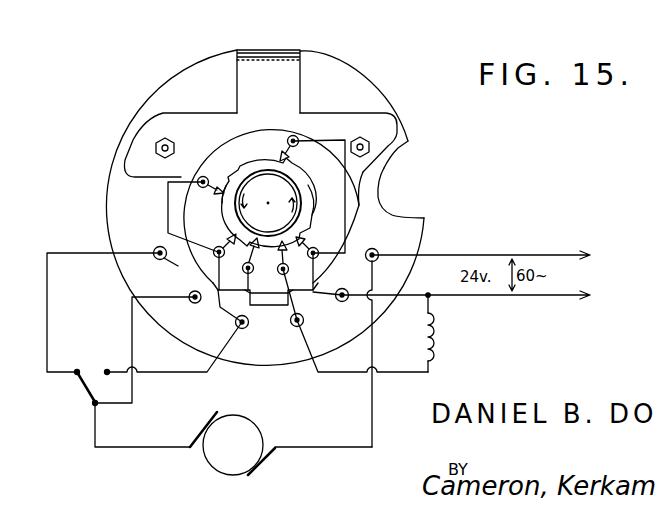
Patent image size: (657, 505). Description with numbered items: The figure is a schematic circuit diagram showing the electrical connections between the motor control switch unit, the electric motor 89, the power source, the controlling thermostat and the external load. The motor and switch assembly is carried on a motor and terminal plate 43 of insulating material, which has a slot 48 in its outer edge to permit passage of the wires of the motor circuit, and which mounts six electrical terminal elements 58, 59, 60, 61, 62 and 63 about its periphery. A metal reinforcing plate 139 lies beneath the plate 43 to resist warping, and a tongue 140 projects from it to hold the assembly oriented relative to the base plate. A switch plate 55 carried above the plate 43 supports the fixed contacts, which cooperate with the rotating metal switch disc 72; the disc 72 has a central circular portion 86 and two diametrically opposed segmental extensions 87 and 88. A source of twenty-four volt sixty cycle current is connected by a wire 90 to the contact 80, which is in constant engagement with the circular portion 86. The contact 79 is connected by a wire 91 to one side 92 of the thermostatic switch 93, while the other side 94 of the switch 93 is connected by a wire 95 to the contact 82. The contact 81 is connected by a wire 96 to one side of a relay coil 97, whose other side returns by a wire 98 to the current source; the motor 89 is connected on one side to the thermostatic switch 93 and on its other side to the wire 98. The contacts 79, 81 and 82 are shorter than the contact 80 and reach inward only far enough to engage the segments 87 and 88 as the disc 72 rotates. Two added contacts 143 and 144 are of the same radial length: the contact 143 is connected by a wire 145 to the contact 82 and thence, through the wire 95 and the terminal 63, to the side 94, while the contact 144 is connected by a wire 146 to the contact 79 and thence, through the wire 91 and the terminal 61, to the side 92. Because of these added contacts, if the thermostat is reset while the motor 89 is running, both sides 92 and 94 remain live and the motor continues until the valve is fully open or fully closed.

The motor and terminal plate 43 is at (177, 81).
The tongue 140 is at (268, 50).
The reinforcing plate 139 is at (143, 137).
The wire 145 is at (335, 140).
The slot 48 is at (400, 150).
The switch plate 55 is at (375, 193).
The wire 146 is at (178, 203).
The central circular portion 86 is at (262, 167).
The segmental extension 87 is at (222, 203).
The segmental extension 88 is at (308, 186).
The metal switch disc 72 is at (238, 218).
The contact 143 is at (288, 141).
The contact 144 is at (206, 176).
The contact 79 is at (229, 262).
The contact 80 is at (259, 264).
The contact 81 is at (284, 258).
The contact 82 is at (305, 244).
The terminal 63 is at (158, 247).
The wire 95 is at (50, 283).
The terminal 62 is at (193, 291).
The wire 91 is at (214, 303).
The terminal 61 is at (235, 322).
The terminal 60 is at (291, 326).
The terminal 59 is at (341, 302).
The terminal 58 is at (374, 248).
The wire 90 is at (498, 297).
The wire 98 is at (449, 254).
The wire 96 is at (341, 375).
The relay coil 97 is at (438, 322).
The side of thermostatic switch 94 is at (76, 377).
The side of thermostatic switch 92 is at (107, 368).
The thermostatic switch 93 is at (99, 406).
The electric motor 89 is at (254, 432).